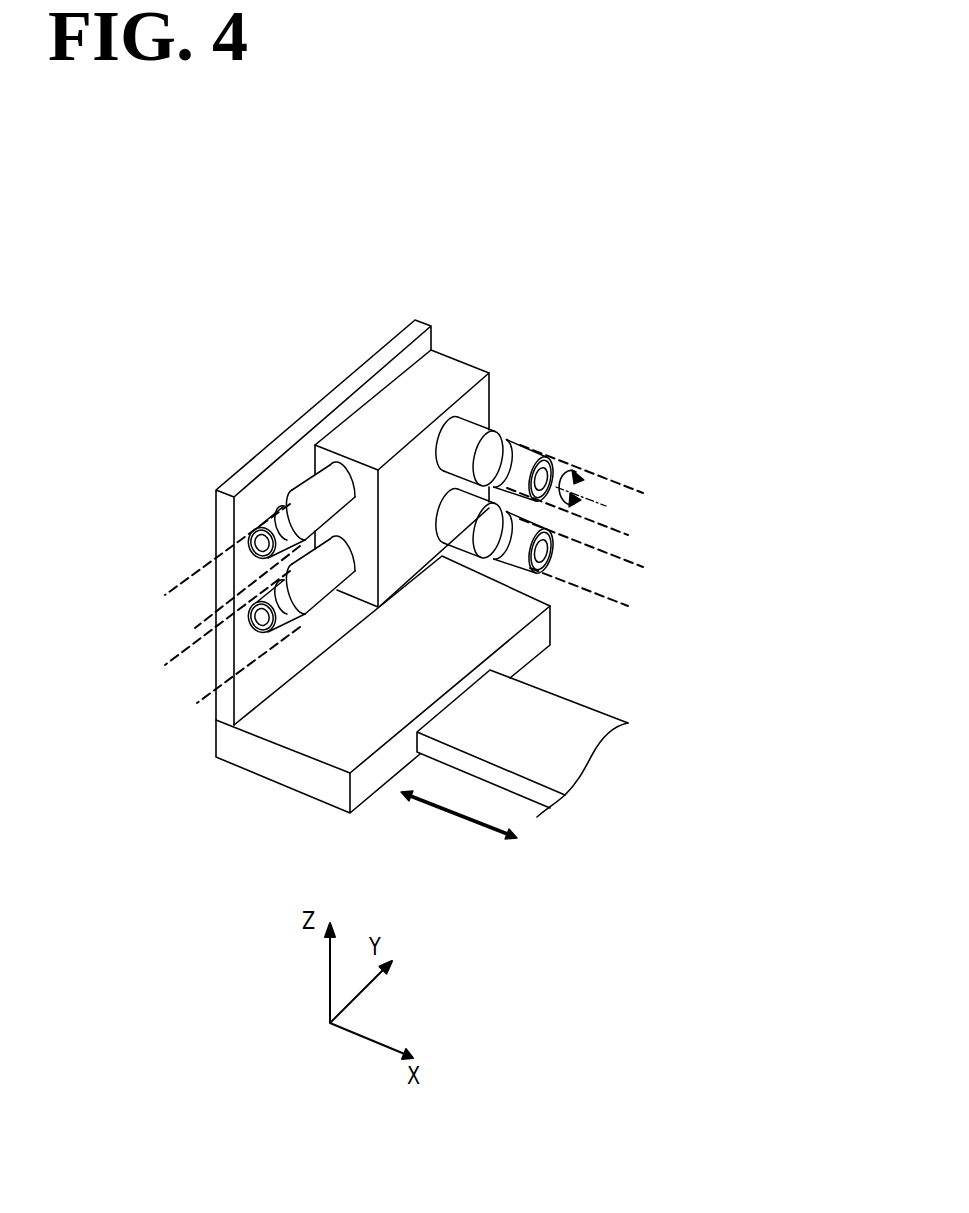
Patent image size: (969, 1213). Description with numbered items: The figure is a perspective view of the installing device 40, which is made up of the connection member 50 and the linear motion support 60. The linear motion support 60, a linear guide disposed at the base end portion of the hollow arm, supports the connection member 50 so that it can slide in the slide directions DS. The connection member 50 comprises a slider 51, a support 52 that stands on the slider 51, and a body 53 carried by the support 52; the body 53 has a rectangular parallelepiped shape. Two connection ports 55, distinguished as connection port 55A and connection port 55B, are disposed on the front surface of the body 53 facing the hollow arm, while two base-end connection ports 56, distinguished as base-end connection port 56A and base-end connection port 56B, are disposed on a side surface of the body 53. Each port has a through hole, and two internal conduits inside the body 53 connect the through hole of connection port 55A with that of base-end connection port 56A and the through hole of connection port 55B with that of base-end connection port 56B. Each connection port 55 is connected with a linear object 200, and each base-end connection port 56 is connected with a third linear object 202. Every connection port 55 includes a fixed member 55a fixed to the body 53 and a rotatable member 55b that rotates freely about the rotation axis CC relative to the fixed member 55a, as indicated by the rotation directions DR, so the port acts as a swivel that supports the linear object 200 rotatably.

The installing device 40 is at (766, 421).
The connection member 50 is at (184, 479).
The slider 51 is at (320, 730).
The support 52 is at (226, 526).
The body 53 is at (418, 390).
The connection port 55 is at (563, 486).
The connection port 55A is at (597, 383).
The connection port 55B is at (535, 567).
The fixed member 55a is at (463, 438).
The rotatable member 55b is at (493, 447).
The base-end connection port 56 is at (298, 536).
The base-end connection port 56A is at (327, 483).
The base-end connection port 56B is at (332, 572).
The linear motion support 60 is at (537, 737).
The linear object 200 is at (636, 490).
The third linear object 202 is at (193, 575).
The rotation directions DR is at (582, 472).
The rotation axis CC is at (601, 483).
The slide directions DS is at (455, 825).